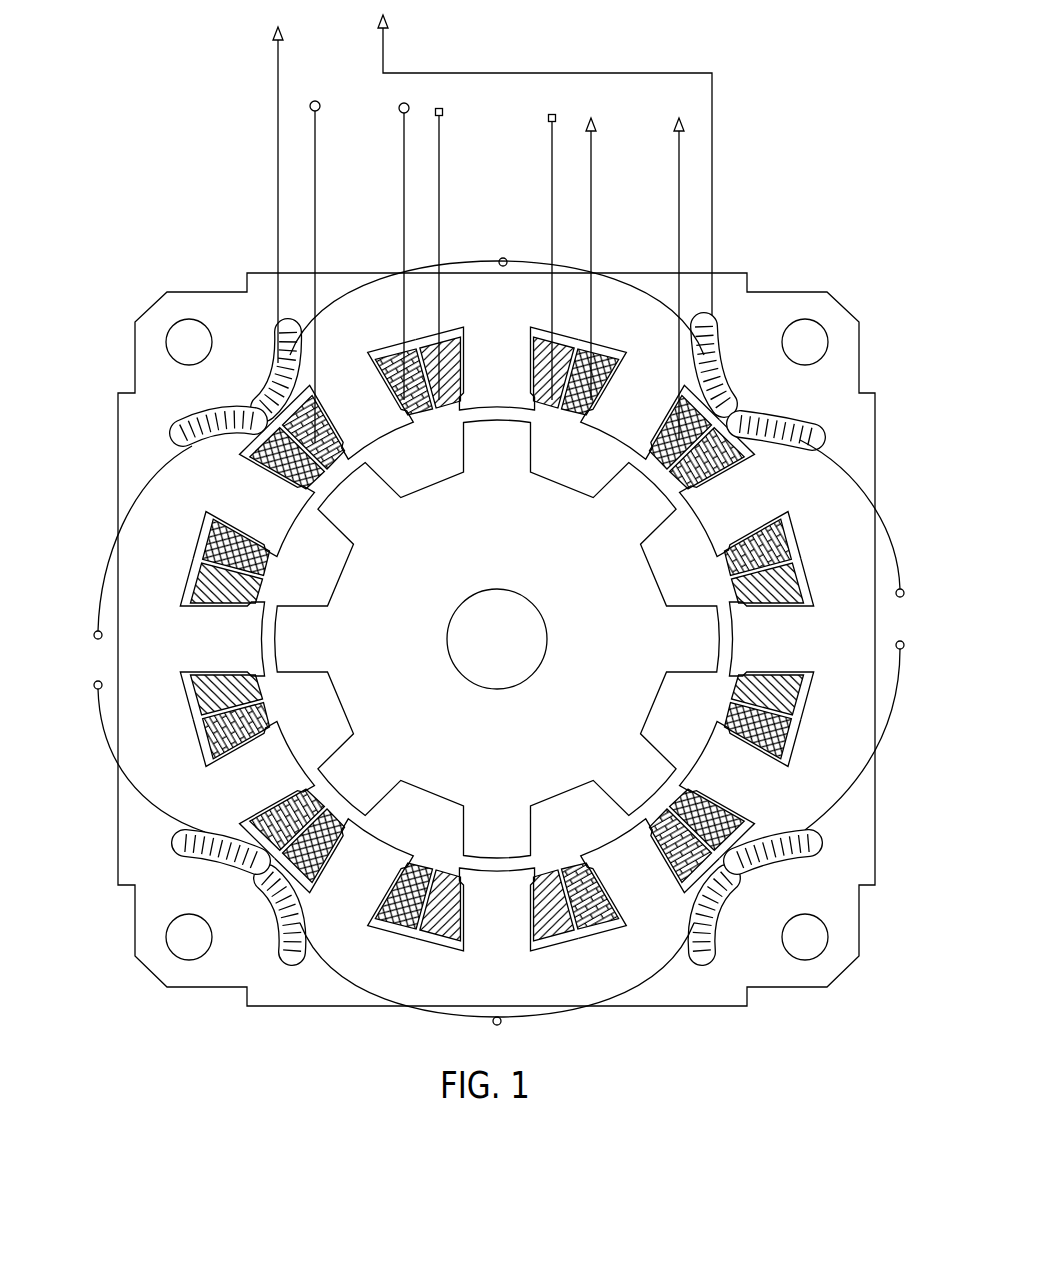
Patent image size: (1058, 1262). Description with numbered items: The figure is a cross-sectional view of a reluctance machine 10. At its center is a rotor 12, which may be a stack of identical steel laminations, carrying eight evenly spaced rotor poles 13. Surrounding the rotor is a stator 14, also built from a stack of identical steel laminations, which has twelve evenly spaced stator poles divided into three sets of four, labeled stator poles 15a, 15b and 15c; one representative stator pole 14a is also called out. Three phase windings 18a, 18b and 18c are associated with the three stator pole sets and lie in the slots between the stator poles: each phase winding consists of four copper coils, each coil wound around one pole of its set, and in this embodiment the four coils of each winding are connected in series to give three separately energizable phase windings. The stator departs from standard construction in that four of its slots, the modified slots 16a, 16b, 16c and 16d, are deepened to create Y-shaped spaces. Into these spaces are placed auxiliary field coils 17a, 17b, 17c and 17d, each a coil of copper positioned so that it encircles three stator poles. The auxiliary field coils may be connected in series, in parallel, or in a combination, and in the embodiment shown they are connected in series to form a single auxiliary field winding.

The reluctance machine 10 is at (796, 124).
The rotor 12 is at (736, 625).
The rotor poles 13 is at (458, 442).
The stator 14 is at (110, 380).
The stator pole 14a is at (270, 513).
The stator poles (first stator pole set) 15a is at (363, 413).
The stator poles (second stator pole set) 15b is at (500, 388).
The stator poles (third stator pole set) 15c is at (623, 413).
The modified slot 16a is at (720, 390).
The modified slot 16b is at (742, 868).
The modified slot 16c is at (252, 868).
The modified slot 16d is at (260, 380).
The auxiliary field coil 17a is at (327, 50).
The auxiliary field coil 17b is at (857, 539).
The auxiliary field coil 17c is at (497, 984).
The auxiliary field coil 17d is at (133, 561).
The phase winding 18a is at (367, 125).
The phase winding 18b is at (490, 128).
The phase winding 18c is at (640, 128).